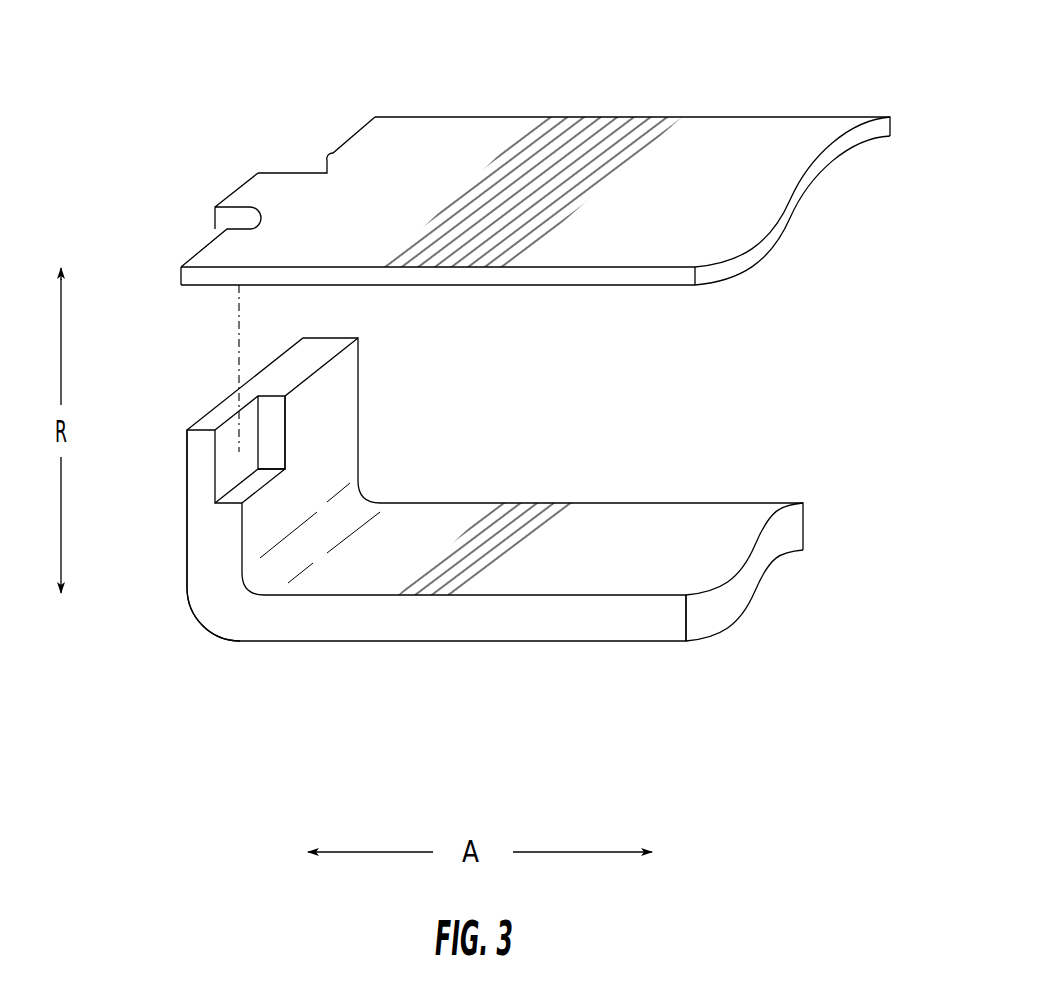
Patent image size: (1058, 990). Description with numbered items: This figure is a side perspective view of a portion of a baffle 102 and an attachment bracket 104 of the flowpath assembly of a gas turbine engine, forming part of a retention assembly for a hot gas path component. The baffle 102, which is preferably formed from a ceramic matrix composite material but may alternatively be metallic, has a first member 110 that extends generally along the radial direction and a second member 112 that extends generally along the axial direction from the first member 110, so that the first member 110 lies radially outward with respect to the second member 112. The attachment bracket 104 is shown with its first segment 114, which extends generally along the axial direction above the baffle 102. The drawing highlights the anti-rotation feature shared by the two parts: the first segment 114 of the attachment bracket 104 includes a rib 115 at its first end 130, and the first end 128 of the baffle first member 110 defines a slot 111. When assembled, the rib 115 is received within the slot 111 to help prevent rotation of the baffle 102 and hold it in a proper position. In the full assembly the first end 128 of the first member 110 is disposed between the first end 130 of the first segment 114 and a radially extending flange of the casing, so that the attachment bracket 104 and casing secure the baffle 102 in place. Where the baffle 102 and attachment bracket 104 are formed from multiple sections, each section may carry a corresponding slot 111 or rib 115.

The baffle 102 is at (385, 655).
The attachment bracket 104 is at (622, 70).
The first member 110 is at (202, 592).
The slot 111 is at (240, 465).
The second member 112 is at (680, 515).
The first segment 114 is at (805, 130).
The rib 115 is at (259, 193).
The first end 128 is at (200, 411).
The first end 130 is at (344, 127).